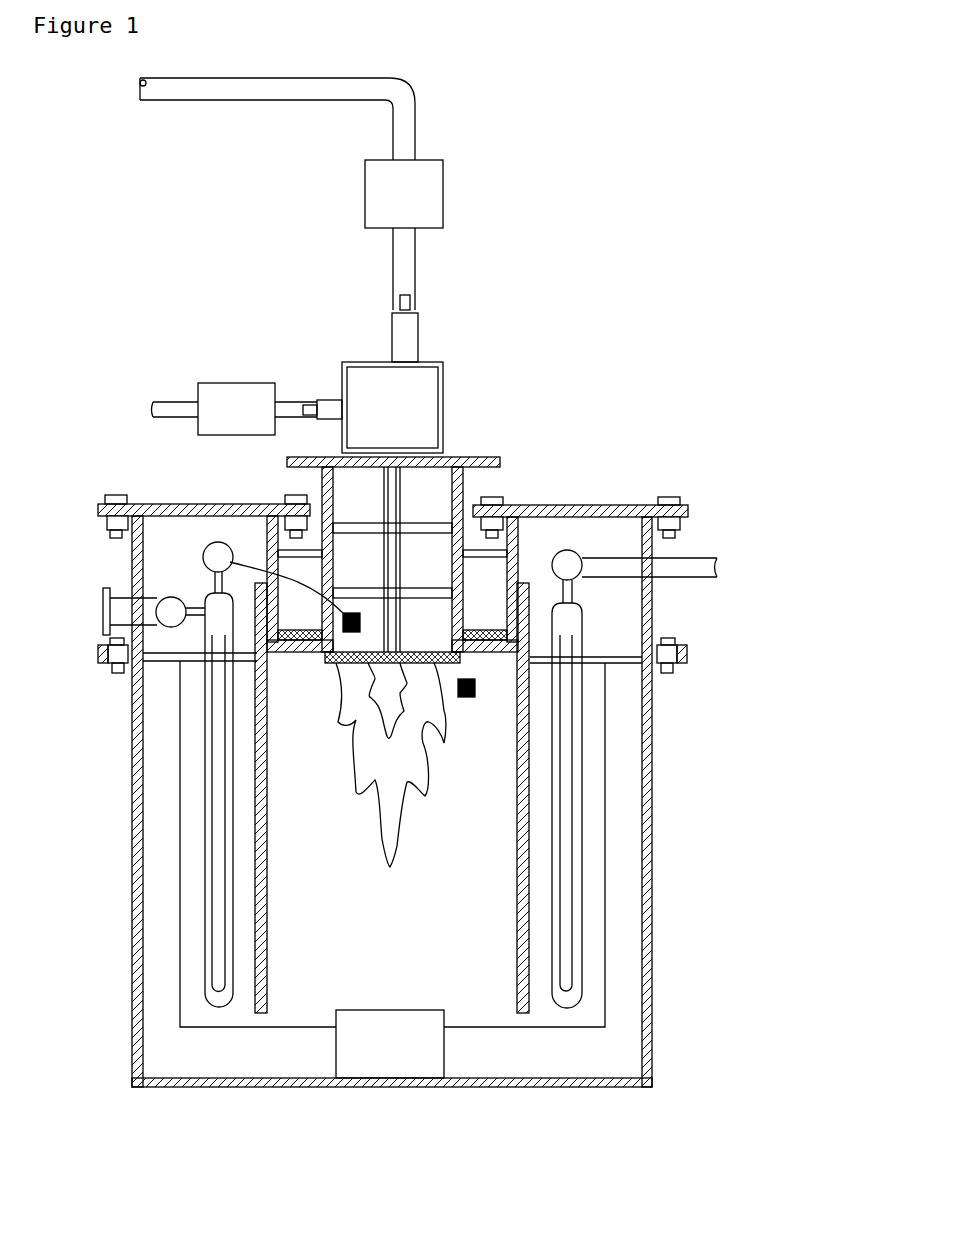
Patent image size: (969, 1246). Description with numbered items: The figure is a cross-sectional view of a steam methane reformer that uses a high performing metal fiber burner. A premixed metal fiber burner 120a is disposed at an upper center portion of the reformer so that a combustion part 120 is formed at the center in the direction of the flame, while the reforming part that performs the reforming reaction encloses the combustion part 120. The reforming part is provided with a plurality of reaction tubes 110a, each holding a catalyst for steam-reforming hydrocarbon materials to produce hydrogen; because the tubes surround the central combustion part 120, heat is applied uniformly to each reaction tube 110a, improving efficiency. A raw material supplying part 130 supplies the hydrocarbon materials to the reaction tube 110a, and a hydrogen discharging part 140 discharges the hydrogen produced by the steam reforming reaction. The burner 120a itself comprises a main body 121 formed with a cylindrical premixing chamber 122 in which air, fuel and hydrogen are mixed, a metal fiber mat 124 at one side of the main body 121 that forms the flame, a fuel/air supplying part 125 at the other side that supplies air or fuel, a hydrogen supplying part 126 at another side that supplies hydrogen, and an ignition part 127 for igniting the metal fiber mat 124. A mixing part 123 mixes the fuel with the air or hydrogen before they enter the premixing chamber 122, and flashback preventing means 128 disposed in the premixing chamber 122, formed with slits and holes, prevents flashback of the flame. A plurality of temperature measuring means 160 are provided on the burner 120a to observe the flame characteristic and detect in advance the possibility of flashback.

The premixed metal fiber burner 120a is at (473, 388).
The fuel/air supplying part 125 is at (430, 197).
The mixing part 123 is at (347, 360).
The hydrogen supplying part 126 is at (223, 388).
The main body 121 is at (467, 481).
The premixing chamber 122 is at (348, 483).
The flashback preventing means 128 is at (427, 593).
The metal fiber mat 124 is at (335, 667).
The ignition part 127 is at (374, 780).
The temperature measuring means 160 is at (208, 547).
The raw material supplying part 130 is at (167, 607).
The hydrogen discharging part 140 is at (567, 565).
The reaction tube 110a is at (582, 925).
The combustion part 120 is at (372, 954).